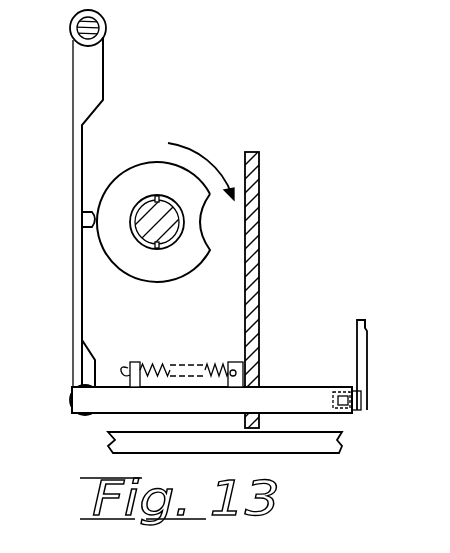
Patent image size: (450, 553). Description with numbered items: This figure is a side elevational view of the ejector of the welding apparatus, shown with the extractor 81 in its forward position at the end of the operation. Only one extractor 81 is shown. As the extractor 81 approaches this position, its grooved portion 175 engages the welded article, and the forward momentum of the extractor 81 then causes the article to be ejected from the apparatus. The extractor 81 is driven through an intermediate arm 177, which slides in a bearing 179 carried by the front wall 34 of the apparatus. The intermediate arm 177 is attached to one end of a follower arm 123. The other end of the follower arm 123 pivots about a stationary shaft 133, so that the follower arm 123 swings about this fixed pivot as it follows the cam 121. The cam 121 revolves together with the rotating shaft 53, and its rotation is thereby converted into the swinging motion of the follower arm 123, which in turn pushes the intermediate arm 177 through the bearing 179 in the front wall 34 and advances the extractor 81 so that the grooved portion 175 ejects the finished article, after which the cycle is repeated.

The stationary shaft 133 is at (106, 30).
The cam 121 is at (140, 170).
The rotating shaft 53 is at (157, 245).
The front wall 34 is at (259, 200).
The follower arm 123 is at (73, 313).
The intermediate arm 177 is at (216, 400).
The bearing 179 is at (257, 387).
The grooved portion 175 is at (366, 328).
The extractor 81 is at (368, 365).